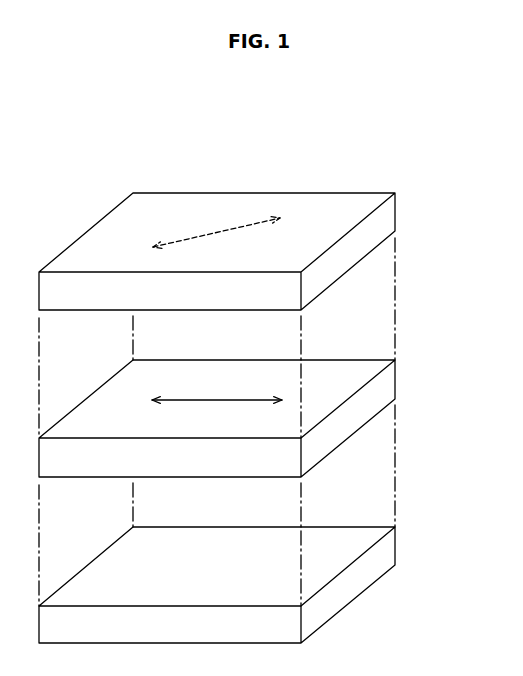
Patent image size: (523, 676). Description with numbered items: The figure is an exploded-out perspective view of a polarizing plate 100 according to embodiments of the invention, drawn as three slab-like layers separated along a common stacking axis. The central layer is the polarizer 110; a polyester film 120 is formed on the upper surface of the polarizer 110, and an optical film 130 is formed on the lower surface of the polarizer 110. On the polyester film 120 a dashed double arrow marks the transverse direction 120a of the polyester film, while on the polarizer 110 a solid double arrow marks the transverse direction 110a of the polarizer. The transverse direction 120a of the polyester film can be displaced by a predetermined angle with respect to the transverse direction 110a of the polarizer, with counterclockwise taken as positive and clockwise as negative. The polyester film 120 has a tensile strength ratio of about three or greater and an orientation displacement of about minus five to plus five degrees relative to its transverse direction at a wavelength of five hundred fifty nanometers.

The polarizing plate 100 is at (369, 167).
The polarizer 110 is at (387, 385).
The transverse direction of the polarizer 110a is at (210, 400).
The polyester film 120 is at (387, 217).
The transverse direction of the polyester film 120a is at (210, 233).
The optical film 130 is at (385, 552).